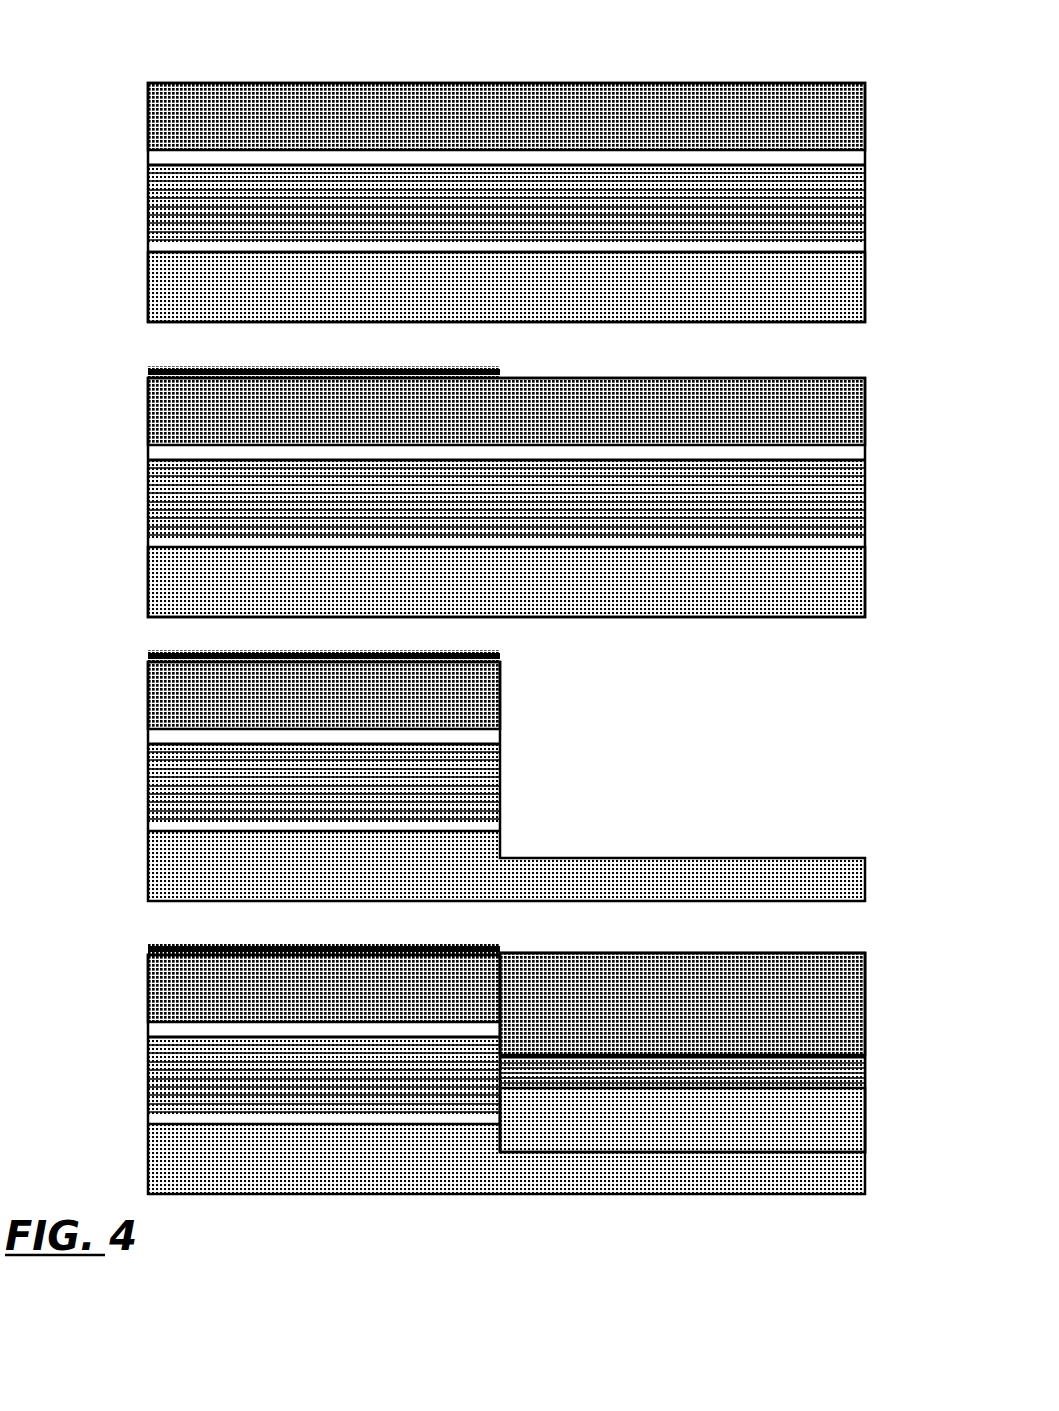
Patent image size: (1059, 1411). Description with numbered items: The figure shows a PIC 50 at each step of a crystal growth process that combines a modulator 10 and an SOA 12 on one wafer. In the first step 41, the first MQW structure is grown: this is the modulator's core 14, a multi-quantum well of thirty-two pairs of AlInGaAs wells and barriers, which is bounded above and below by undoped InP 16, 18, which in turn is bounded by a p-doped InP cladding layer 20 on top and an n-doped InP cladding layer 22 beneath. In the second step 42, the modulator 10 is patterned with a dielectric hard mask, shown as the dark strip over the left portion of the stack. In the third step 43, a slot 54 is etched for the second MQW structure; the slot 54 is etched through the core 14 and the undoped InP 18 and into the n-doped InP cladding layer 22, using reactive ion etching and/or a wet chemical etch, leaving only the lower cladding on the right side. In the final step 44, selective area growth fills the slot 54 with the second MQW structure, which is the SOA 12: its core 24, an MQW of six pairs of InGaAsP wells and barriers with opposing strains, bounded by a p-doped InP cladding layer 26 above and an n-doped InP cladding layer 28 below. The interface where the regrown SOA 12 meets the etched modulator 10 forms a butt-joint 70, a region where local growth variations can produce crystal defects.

The PIC 50 is at (622, 56).
The step of growing a first MQW structure 41 is at (68, 213).
The step of patterning the modulator with a dielectric hard mask 42 is at (68, 526).
The step of etching a slot 43 is at (68, 810).
The step of performing Selective Area Growth 44 is at (68, 1083).
The p-doped InP cladding layer 20 is at (302, 92).
The undoped InP 16 is at (338, 158).
The core 14 is at (148, 183).
The undoped InP 18 is at (158, 247).
The n-doped InP cladding layer 22 is at (155, 310).
The slot 54 is at (683, 762).
The p-doped InP cladding layer 26 is at (855, 982).
The core 24 is at (852, 1078).
The n-doped InP cladding layer 28 is at (852, 1130).
The butt-joint 70 is at (498, 1083).
The modulator 10 is at (336, 1213).
The SOA 12 is at (586, 1213).